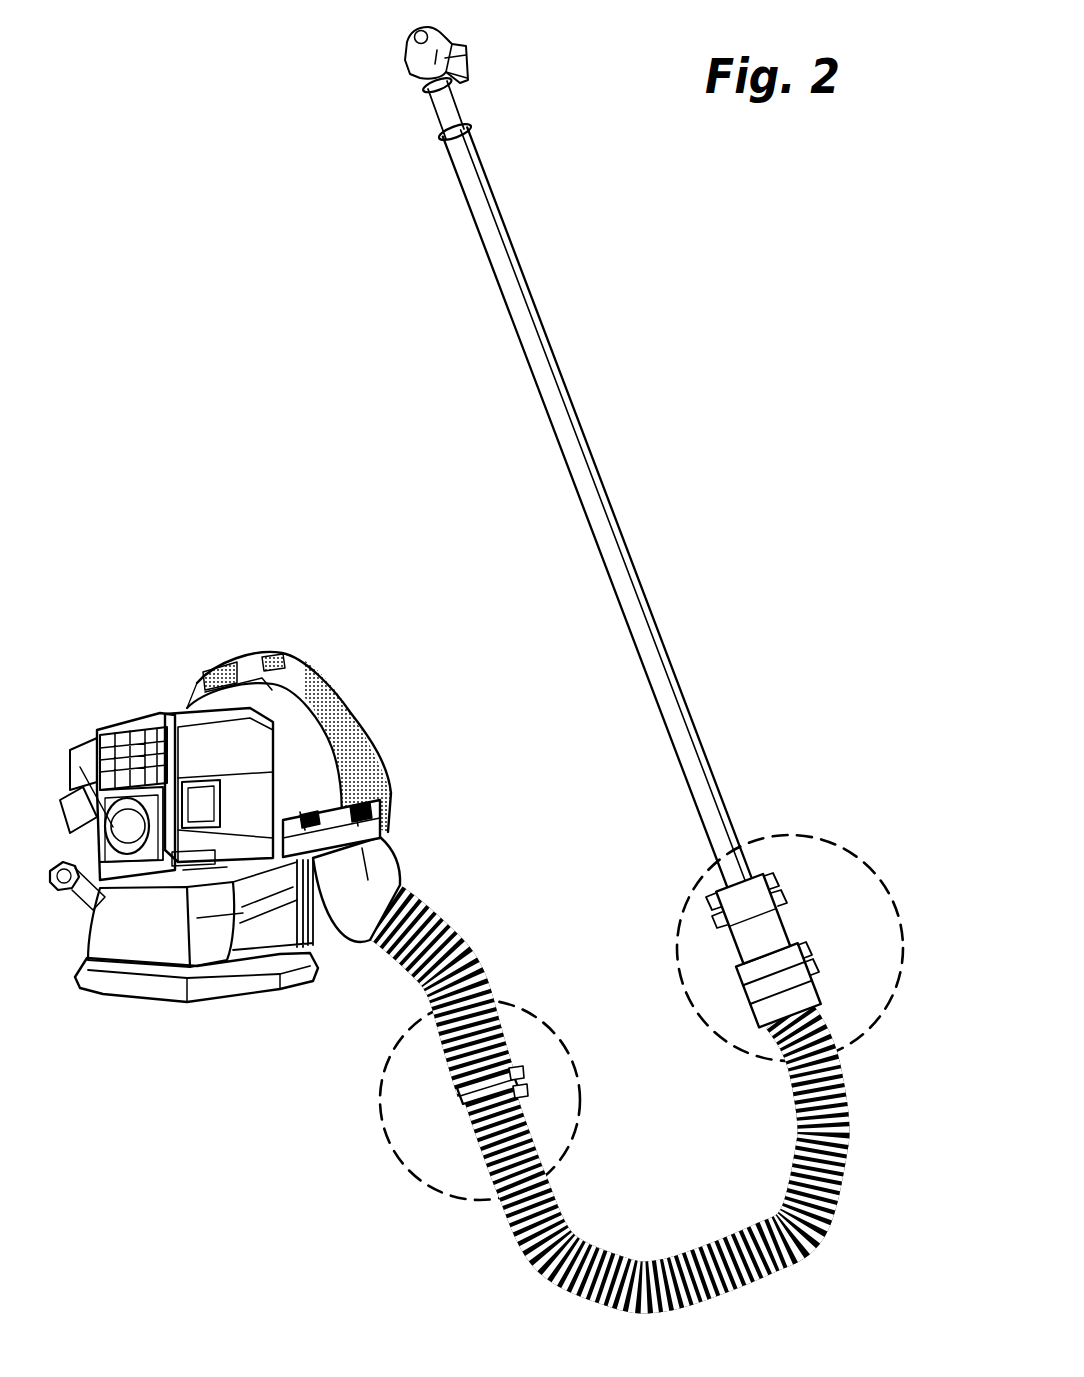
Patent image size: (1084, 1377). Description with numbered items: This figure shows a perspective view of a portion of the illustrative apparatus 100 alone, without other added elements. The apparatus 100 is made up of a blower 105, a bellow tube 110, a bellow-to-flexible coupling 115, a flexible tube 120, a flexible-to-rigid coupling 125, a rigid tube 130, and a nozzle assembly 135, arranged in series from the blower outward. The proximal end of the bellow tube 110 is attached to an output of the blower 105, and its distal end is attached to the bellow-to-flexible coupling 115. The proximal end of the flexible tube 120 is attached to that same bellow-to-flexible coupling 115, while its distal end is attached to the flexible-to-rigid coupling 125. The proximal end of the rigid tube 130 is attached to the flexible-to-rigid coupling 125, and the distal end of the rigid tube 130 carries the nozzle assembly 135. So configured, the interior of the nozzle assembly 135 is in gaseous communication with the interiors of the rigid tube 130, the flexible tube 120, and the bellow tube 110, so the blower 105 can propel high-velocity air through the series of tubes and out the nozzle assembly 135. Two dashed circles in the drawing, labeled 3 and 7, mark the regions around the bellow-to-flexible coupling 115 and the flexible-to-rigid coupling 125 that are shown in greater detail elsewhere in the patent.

The apparatus 100 is at (692, 372).
The detail region of FIG. 3 is at (370, 1132).
The detail region of FIG. 7 is at (874, 841).
The blower 105 is at (122, 937).
The bellow tube 110 is at (462, 943).
The bellow-to-flexible coupling 115 is at (465, 1110).
The flexible tube 120 is at (822, 1214).
The flexible-to-rigid coupling 125 is at (795, 942).
The rigid tube 130 is at (612, 542).
The nozzle assembly 135 is at (402, 72).